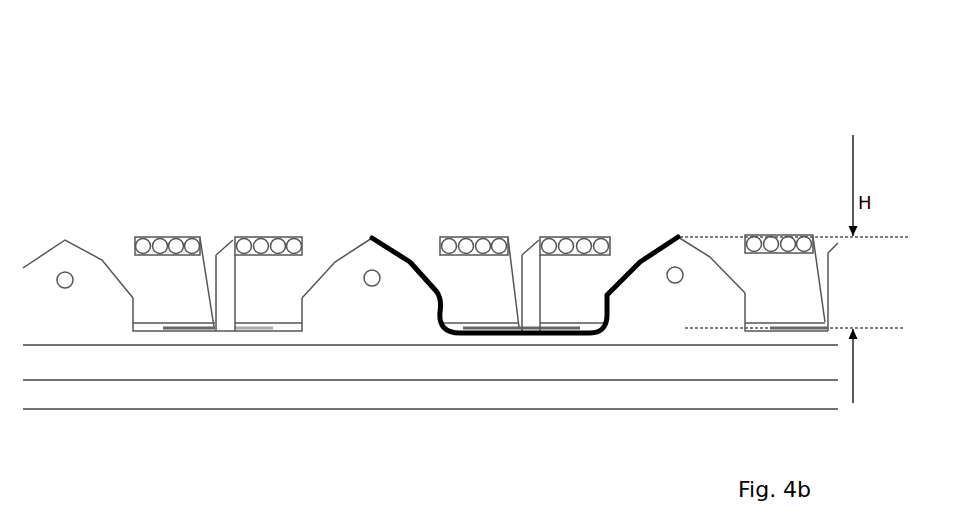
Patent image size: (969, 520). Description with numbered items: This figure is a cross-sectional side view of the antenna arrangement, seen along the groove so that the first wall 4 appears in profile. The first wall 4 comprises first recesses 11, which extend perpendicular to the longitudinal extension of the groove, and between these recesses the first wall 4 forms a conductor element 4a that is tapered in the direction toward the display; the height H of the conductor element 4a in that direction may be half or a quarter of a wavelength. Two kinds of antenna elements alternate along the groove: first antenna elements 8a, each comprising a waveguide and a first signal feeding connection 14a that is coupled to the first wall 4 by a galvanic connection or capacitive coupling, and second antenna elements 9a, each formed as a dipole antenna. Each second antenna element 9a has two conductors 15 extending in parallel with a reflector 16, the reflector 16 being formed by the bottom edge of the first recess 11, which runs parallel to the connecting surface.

The first wall 4 is at (311, 238).
The conductor element 4a is at (367, 305).
The first antenna element 8a is at (372, 213).
The second antenna element 9a is at (208, 215).
The first recess 11 is at (158, 297).
The first signal feeding connection 14a is at (377, 272).
The conductor 15 is at (175, 220).
The reflector 16 is at (488, 340).